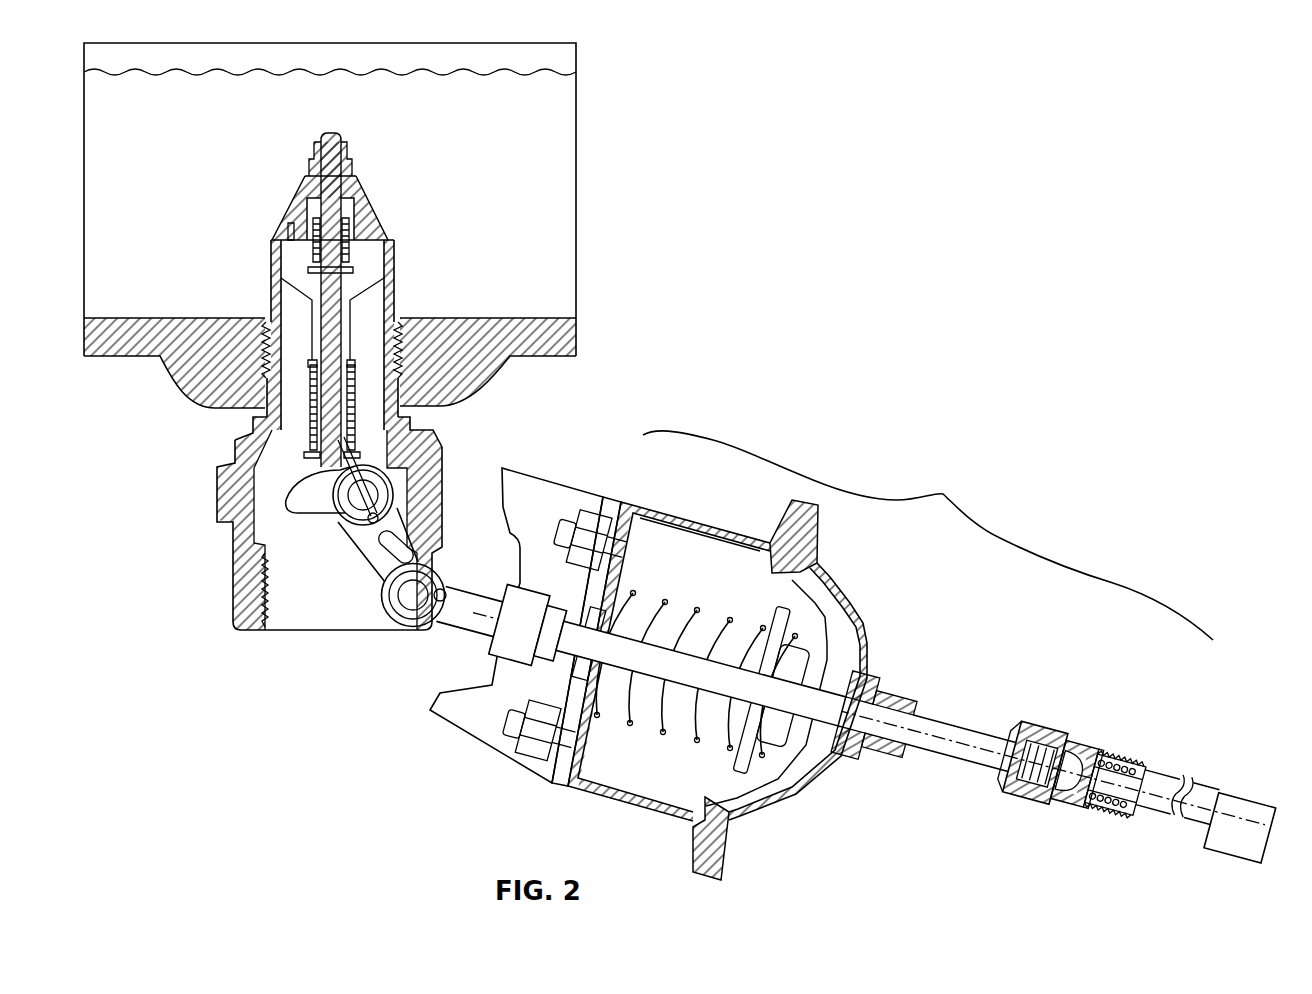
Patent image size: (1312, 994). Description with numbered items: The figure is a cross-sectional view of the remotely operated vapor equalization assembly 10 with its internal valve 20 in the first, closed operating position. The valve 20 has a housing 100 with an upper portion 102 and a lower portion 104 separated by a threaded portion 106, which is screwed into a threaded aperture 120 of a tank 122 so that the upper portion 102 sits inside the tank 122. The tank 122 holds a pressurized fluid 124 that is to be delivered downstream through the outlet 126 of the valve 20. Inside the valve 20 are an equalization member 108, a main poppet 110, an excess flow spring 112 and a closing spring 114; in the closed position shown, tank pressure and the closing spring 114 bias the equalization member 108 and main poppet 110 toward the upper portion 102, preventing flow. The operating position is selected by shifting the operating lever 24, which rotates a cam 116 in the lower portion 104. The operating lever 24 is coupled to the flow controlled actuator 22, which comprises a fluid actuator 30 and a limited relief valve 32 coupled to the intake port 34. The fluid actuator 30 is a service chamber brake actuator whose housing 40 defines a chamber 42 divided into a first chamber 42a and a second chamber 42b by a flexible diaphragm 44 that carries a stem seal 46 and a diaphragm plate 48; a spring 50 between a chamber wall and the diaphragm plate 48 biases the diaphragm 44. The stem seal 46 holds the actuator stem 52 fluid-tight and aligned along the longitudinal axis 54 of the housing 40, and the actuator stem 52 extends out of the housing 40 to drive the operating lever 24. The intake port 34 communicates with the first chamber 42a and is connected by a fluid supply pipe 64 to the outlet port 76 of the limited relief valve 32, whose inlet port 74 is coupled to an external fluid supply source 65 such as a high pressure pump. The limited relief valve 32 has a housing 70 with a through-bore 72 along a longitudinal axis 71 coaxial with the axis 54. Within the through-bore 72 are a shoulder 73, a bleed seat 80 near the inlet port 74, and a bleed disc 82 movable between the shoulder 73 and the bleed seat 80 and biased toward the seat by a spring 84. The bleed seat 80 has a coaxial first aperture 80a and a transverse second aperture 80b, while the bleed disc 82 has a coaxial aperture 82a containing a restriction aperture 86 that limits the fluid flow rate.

The remotely operated vapor equalization assembly 10 is at (833, 149).
The internal valve 20 is at (416, 180).
The flow controlled actuator 22 is at (928, 535).
The operating lever 24 is at (370, 557).
The fluid actuator 30 is at (596, 794).
The limited relief valve 32 is at (1012, 798).
The intake port 34 is at (897, 693).
The housing 40 is at (820, 543).
The chamber 42 is at (718, 553).
The first chamber 42a is at (844, 616).
The second chamber 42b is at (690, 812).
The flexible diaphragm 44 is at (798, 797).
The stem seal 46 is at (803, 625).
The diaphragm plate 48 is at (800, 627).
The spring 50 is at (600, 722).
The actuator stem 52 is at (699, 686).
The longitudinal axis 54 is at (470, 612).
The fluid supply pipe 64 is at (927, 710).
The external fluid supply source 65 is at (1256, 800).
The housing 70 is at (1098, 757).
The longitudinal axis 71 is at (990, 749).
The through-bore 72 is at (1084, 817).
The shoulder 73 is at (1072, 755).
The inlet port 74 is at (1165, 795).
The outlet port 76 is at (1003, 767).
The bleed seat 80 is at (1110, 810).
The first aperture 80a is at (1150, 775).
The second aperture 80b is at (1127, 786).
The bleed disc 82 is at (1033, 728).
The aperture 82a is at (1055, 796).
The spring 84 is at (1097, 817).
The restriction aperture 86 is at (1093, 788).
The housing 100 is at (390, 305).
The upper portion 102 is at (394, 273).
The lower portion 104 is at (242, 623).
The threaded portion 106 is at (438, 398).
The equalization member 108 is at (352, 150).
The main poppet 110 is at (293, 211).
The excess flow spring 112 is at (310, 252).
The closing spring 114 is at (250, 427).
The cam 116 is at (317, 507).
The threaded aperture 120 is at (262, 325).
The tank 122 is at (578, 179).
The fluid 124 is at (487, 74).
The outlet 126 is at (328, 631).